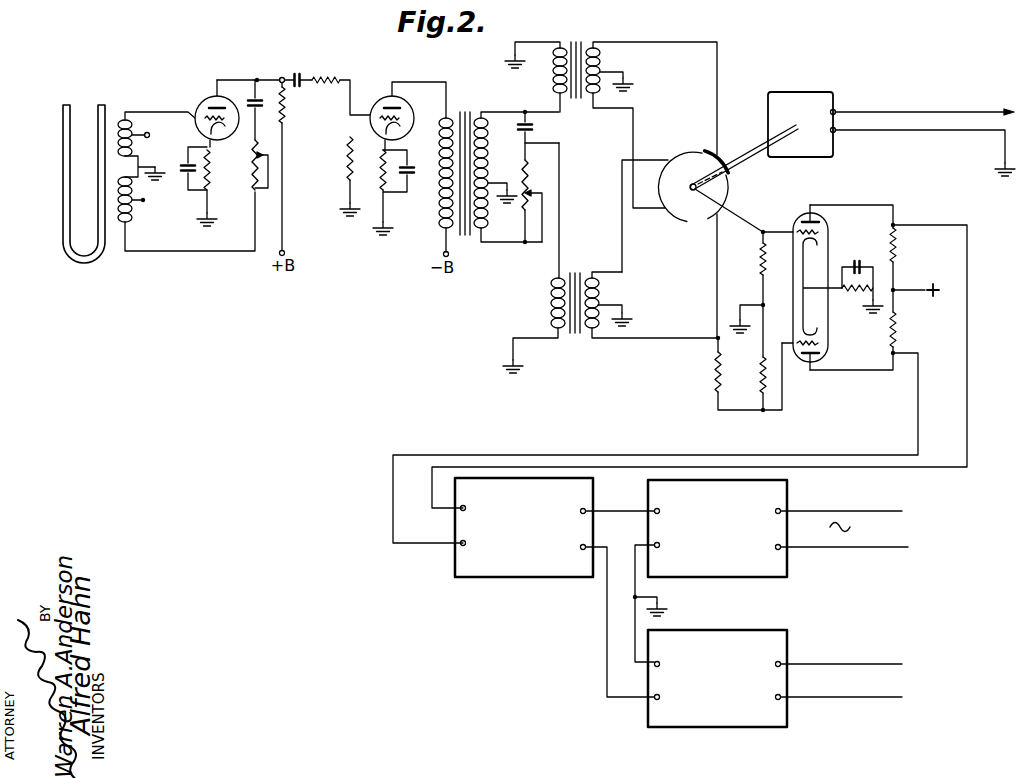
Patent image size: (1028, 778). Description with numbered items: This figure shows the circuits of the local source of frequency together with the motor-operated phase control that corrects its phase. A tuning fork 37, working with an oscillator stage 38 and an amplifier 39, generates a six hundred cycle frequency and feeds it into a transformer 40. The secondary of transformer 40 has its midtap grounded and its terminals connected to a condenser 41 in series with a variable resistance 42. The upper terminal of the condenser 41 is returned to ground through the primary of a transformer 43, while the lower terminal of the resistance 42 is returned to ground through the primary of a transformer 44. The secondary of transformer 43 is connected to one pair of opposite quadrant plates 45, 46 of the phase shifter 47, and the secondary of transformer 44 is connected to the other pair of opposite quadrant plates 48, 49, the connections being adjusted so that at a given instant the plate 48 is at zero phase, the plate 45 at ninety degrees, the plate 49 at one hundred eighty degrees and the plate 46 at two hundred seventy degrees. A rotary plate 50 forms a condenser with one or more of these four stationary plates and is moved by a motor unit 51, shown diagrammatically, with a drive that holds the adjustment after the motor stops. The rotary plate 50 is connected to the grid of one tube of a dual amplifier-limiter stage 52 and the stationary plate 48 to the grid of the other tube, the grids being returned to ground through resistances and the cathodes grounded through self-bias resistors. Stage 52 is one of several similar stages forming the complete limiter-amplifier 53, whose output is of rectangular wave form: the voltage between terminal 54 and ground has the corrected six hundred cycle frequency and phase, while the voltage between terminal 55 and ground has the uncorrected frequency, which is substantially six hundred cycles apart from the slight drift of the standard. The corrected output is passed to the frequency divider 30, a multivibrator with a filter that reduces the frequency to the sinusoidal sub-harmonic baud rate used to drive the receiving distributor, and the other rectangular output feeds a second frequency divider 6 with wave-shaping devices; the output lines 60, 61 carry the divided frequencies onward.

The tuning fork 37 is at (83, 118).
The oscillator stage 38 is at (226, 64).
The amplifier 39 is at (382, 71).
The transformer 40 is at (462, 112).
The condenser 41 is at (534, 127).
The variable resistance 42 is at (528, 181).
The transformer 43 is at (576, 39).
The transformer 44 is at (573, 339).
The quadrant plate 45 is at (738, 159).
The quadrant plate 46 is at (670, 221).
The phase shifter 47 is at (725, 184).
The quadrant plate 48 is at (712, 232).
The quadrant plate 49 is at (691, 149).
The rotary plate 50 is at (699, 172).
The motor unit 51 is at (801, 91).
The dual amplifier-limiter stage 52 is at (771, 304).
The limiter-amplifier 53 is at (516, 580).
The terminal 54 is at (617, 509).
The terminal 55 is at (606, 613).
The frequency divider 30 is at (717, 577).
The frequency divider 6 is at (716, 727).
The output line 60 is at (841, 512).
The output line 61 is at (838, 549).